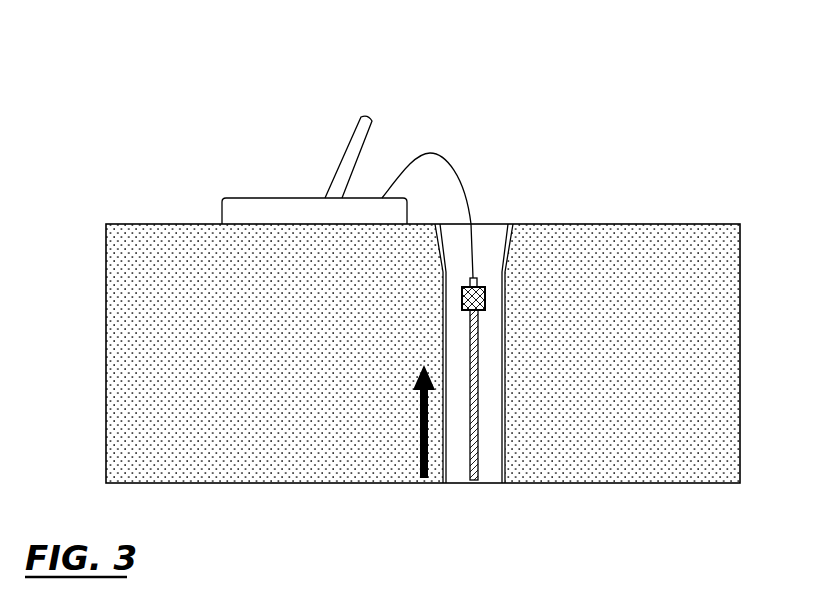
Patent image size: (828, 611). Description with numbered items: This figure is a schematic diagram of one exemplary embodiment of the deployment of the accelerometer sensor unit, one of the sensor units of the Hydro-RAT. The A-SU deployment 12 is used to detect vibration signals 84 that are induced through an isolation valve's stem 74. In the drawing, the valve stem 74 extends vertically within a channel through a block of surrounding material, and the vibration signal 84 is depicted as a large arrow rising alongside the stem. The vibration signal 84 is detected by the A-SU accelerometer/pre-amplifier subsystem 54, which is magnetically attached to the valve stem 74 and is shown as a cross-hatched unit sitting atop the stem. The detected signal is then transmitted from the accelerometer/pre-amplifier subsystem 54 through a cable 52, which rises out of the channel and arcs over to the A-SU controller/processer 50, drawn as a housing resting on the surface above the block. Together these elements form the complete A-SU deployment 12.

The A-SU deployment 12 is at (401, 76).
The A-SU controller/processer 50 is at (249, 187).
The cable 52 is at (463, 171).
The A-SU accelerometer/pre-amplifier subsystem 54 is at (457, 314).
The valve stem 74 is at (486, 359).
The vibration signal 84 is at (408, 467).